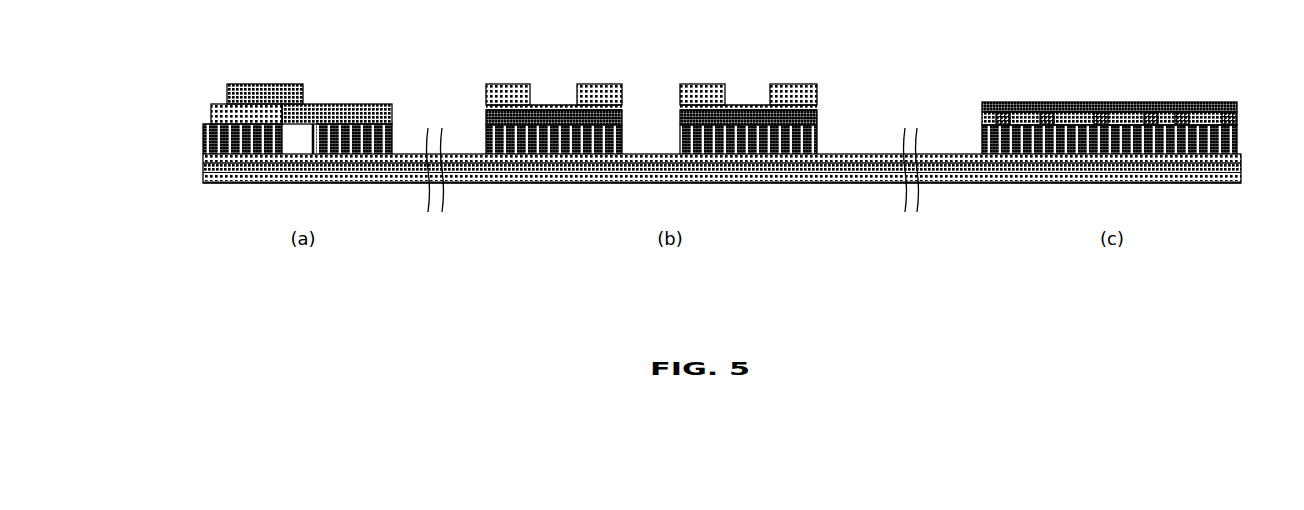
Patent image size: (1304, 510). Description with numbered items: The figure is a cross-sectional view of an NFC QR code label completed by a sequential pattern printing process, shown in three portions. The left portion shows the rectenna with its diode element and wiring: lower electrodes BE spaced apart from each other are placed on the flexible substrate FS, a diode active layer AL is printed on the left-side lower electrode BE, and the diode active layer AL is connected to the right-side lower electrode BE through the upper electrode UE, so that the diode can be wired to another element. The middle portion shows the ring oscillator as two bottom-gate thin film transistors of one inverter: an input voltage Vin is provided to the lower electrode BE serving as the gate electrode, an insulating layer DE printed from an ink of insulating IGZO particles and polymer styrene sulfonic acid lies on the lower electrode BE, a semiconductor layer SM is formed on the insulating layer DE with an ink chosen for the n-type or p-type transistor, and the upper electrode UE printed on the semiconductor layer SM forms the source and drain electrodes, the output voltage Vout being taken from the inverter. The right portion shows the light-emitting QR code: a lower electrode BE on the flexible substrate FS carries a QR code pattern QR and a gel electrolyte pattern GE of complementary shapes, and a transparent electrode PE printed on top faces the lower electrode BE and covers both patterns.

The upper electrode UE is at (343, 103).
The diode active layer AL is at (210, 116).
The lower electrode BE is at (207, 143).
The flexible substrate FS is at (229, 182).
The insulating layer DE is at (486, 108).
The semiconductor layer SM is at (818, 115).
The output voltage Vout is at (602, 83).
The input voltage Vin is at (669, 152).
The gel electrolyte pattern GE is at (982, 116).
The transparent electrode PE is at (1202, 100).
The QR code pattern QR is at (1237, 114).